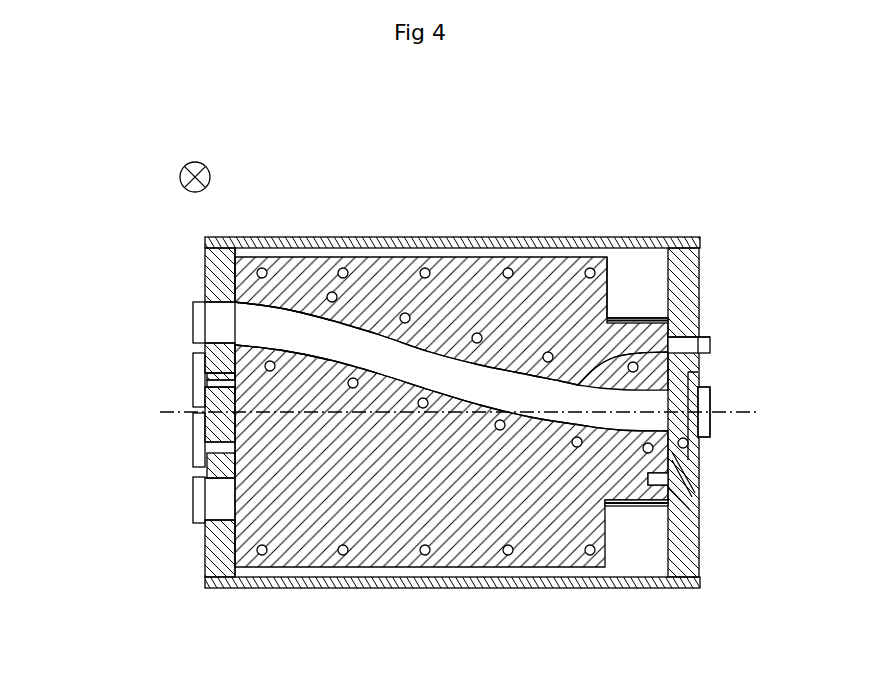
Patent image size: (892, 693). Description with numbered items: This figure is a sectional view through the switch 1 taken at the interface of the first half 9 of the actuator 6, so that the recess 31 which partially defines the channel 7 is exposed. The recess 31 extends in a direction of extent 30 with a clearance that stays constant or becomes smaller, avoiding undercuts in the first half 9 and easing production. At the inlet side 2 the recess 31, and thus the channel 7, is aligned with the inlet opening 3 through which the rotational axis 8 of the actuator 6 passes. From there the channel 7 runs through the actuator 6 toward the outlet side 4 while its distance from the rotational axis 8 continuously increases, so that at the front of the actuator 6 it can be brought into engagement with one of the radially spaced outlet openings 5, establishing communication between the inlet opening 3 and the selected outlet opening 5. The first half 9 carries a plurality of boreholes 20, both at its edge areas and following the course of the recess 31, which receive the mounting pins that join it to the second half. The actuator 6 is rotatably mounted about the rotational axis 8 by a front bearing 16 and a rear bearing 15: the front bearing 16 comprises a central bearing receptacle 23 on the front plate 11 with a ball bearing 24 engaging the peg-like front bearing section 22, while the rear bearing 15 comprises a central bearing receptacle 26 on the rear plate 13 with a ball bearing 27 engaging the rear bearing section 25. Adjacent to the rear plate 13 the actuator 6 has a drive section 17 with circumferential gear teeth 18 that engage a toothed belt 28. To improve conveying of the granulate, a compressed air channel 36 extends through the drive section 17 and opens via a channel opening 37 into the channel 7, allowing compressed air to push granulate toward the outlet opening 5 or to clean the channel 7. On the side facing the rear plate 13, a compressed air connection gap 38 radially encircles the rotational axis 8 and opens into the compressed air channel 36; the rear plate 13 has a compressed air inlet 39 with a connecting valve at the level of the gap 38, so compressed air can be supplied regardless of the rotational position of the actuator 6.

The switch 1 is at (142, 236).
The inlet side 2 is at (768, 393).
The inlet opening 3 is at (697, 366).
The outlet side 4 is at (88, 421).
The outlet opening 5 is at (217, 330).
The actuator 6 is at (523, 308).
The channel 7 is at (418, 368).
The rotational axis 8 is at (730, 411).
The first half 9 is at (392, 268).
The front plate 11 is at (215, 543).
The rear plate 13 is at (683, 565).
The rear bearing 15 is at (705, 385).
The front bearing 16 is at (215, 456).
The drive section 17 is at (690, 556).
The circumferential gear teeth 18 is at (653, 506).
The boreholes 20 is at (264, 268).
The front bearing section 22 is at (218, 389).
The central bearing receptacle 23 is at (216, 376).
The ball bearing 24 is at (214, 383).
The rear bearing section 25 is at (690, 446).
The central bearing receptacle 26 is at (682, 478).
The ball bearing 27 is at (693, 460).
The toothed belt 28 is at (583, 382).
The direction of extent 30 is at (212, 170).
The recess 31 is at (288, 318).
The compressed air channel 36 is at (670, 335).
The channel opening 37 is at (617, 322).
The compressed air connection gap 38 is at (705, 338).
The compressed air inlet 39 is at (698, 350).